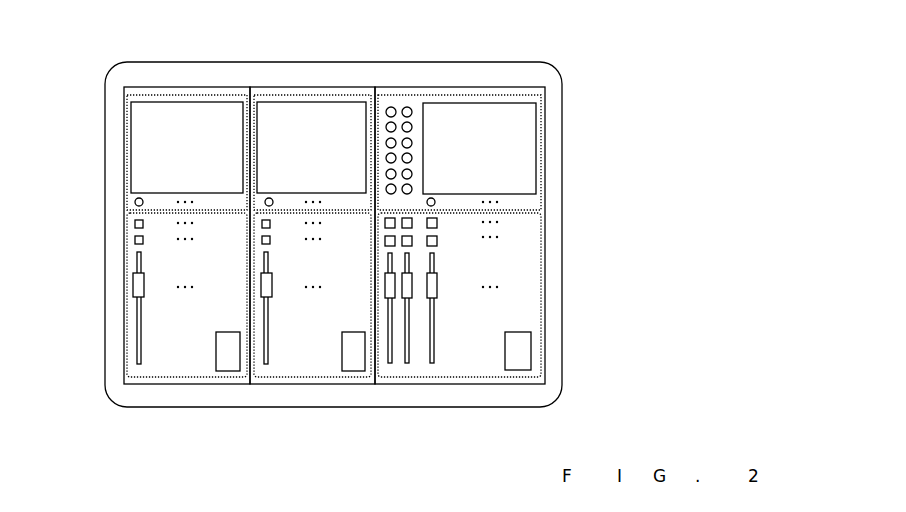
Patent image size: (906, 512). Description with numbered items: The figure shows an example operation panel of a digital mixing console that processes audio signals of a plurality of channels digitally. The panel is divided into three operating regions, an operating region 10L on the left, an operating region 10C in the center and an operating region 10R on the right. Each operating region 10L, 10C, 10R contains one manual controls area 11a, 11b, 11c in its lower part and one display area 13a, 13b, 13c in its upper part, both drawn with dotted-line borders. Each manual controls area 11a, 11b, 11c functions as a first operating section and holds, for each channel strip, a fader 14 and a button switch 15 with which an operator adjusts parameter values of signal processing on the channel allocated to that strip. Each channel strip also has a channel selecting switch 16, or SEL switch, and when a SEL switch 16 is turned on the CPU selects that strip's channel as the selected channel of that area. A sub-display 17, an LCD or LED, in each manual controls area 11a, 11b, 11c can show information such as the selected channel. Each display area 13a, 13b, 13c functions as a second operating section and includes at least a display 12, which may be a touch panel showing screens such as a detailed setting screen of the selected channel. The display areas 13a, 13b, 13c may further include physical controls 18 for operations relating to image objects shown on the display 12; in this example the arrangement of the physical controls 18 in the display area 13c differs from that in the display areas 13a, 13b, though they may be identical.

The operating region L 10L is at (188, 390).
The operating region C 10C is at (320, 390).
The operating region R 10R is at (438, 390).
The manual controls area 11a is at (122, 334).
The manual controls area 11b is at (270, 380).
The manual controls area 11c is at (510, 380).
The display 12 is at (170, 130).
The display area 13a is at (193, 98).
The display area 13b is at (322, 97).
The display area 13c is at (488, 97).
The fader 14 is at (144, 285).
The button switch 15 is at (143, 240).
The channel selecting switch 16 is at (123, 226).
The sub-display 17 is at (214, 345).
The physical controls 18 is at (142, 198).